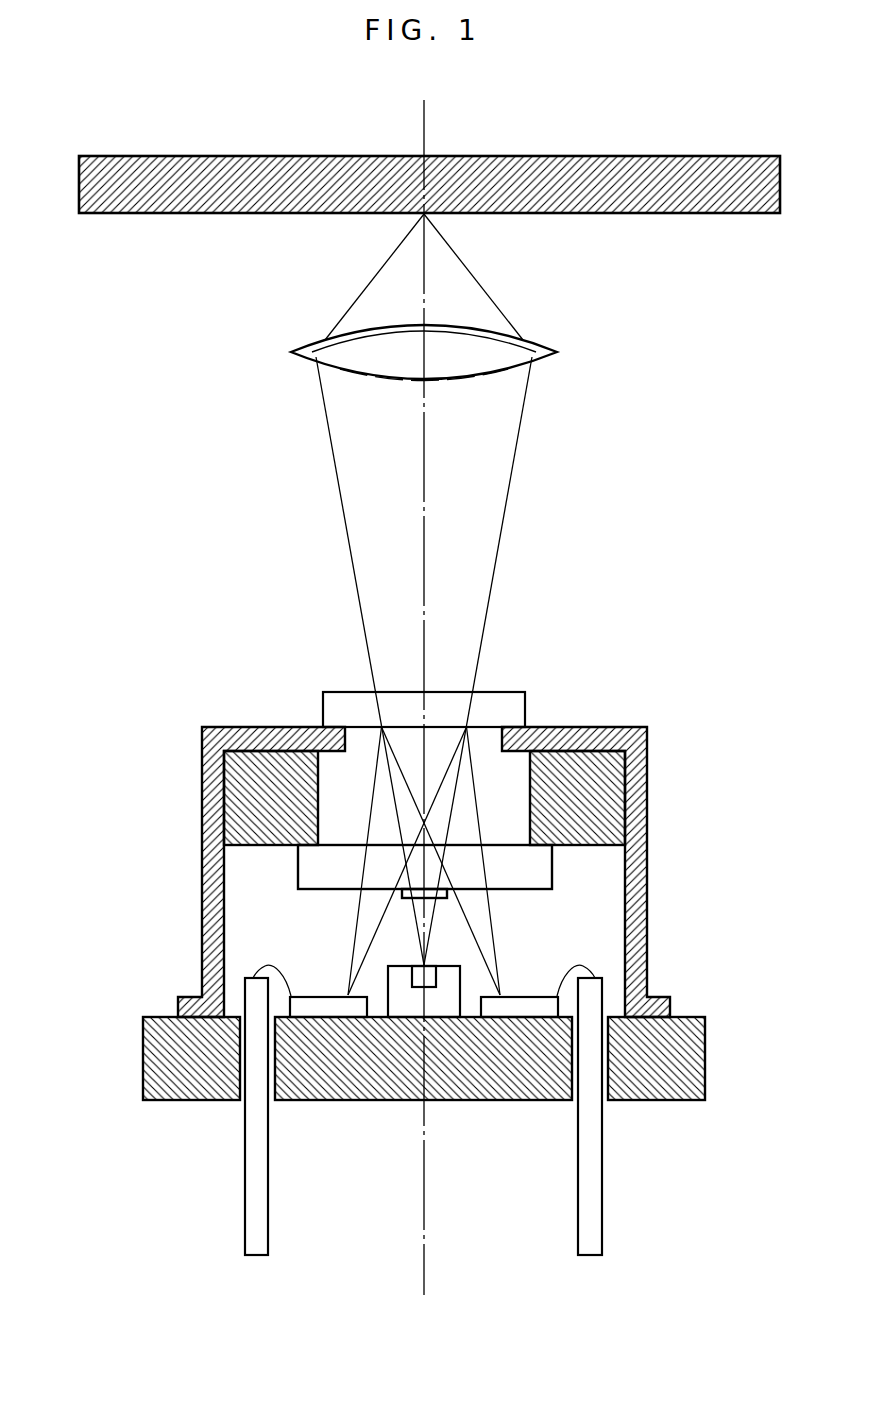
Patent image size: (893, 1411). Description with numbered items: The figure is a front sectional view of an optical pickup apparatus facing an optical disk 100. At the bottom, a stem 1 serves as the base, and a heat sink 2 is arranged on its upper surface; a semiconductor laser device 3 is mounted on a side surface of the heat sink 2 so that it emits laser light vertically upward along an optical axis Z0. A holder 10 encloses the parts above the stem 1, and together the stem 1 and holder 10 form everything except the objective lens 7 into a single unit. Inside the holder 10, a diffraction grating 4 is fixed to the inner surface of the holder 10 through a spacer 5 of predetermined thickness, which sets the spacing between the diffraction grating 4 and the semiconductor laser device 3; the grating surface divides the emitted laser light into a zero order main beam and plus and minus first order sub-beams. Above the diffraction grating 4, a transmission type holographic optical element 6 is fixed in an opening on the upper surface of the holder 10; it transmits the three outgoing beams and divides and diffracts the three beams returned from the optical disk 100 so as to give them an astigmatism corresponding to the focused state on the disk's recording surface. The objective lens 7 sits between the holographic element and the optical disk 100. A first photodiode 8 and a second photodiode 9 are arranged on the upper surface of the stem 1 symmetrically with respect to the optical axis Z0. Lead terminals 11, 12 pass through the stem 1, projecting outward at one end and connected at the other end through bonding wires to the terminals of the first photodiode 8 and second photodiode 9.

The optical disk 100 is at (728, 165).
The objective lens 7 is at (545, 352).
The optical axis Z0 is at (432, 466).
The transmission type holographic optical element 6 is at (513, 707).
The spacer 5 is at (595, 792).
The holder 10 is at (643, 887).
The diffraction grating 4 is at (538, 872).
The stem 1 is at (688, 1042).
The second photodiode 9 is at (327, 1002).
The first photodiode 8 is at (517, 1002).
The heat sink 2 is at (438, 1007).
The semiconductor laser device 3 is at (417, 980).
The lead terminal 12 is at (252, 1170).
The lead terminal 11 is at (593, 1168).